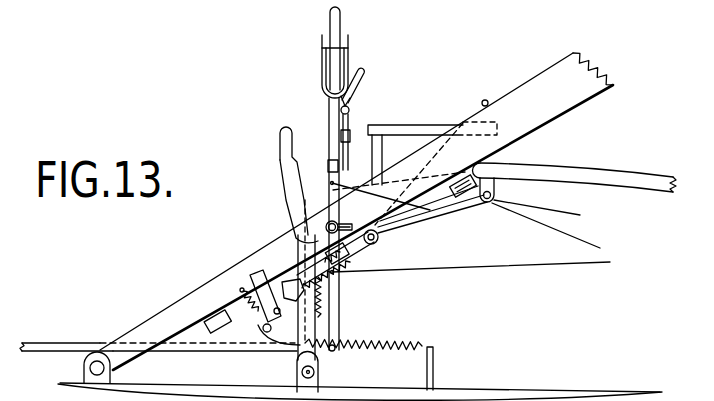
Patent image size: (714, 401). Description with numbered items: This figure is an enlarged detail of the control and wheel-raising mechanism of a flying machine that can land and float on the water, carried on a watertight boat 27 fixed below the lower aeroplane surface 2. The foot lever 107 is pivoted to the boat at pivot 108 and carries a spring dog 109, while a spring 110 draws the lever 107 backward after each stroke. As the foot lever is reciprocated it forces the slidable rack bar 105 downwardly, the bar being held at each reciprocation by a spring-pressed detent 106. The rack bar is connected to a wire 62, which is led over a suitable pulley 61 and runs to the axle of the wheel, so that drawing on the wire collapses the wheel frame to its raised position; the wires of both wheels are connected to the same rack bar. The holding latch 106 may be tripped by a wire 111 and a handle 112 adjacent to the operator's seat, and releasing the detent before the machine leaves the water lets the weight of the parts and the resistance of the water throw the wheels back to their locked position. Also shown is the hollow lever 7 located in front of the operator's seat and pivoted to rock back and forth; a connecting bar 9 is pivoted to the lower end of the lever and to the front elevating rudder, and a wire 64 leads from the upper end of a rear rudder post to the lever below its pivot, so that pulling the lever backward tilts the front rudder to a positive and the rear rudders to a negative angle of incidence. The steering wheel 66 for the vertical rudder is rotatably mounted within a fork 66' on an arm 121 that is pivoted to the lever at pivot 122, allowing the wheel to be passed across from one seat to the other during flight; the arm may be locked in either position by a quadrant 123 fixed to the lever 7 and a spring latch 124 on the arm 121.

The aeroplane surface 2 is at (594, 171).
The lever 7 is at (333, 297).
The connecting bar 9 is at (90, 348).
The boat 27 is at (568, 372).
The pulley 61 is at (490, 206).
The wire 62 is at (408, 223).
The wire 64 is at (445, 215).
The steering wheel 66 is at (361, 47).
The fork 66' is at (365, 66).
The rack bar 105 is at (240, 300).
The spring-pressed detent 106 is at (222, 350).
The foot lever 107 is at (313, 331).
The pivot 108 is at (315, 375).
The spring dog 109 is at (293, 275).
The spring 110 is at (402, 340).
The wire 111 is at (250, 346).
The handle 112 is at (485, 100).
The arm 121 is at (328, 103).
The pivot 122 is at (330, 167).
The quadrant 123 is at (352, 135).
The spring latch 124 is at (352, 100).